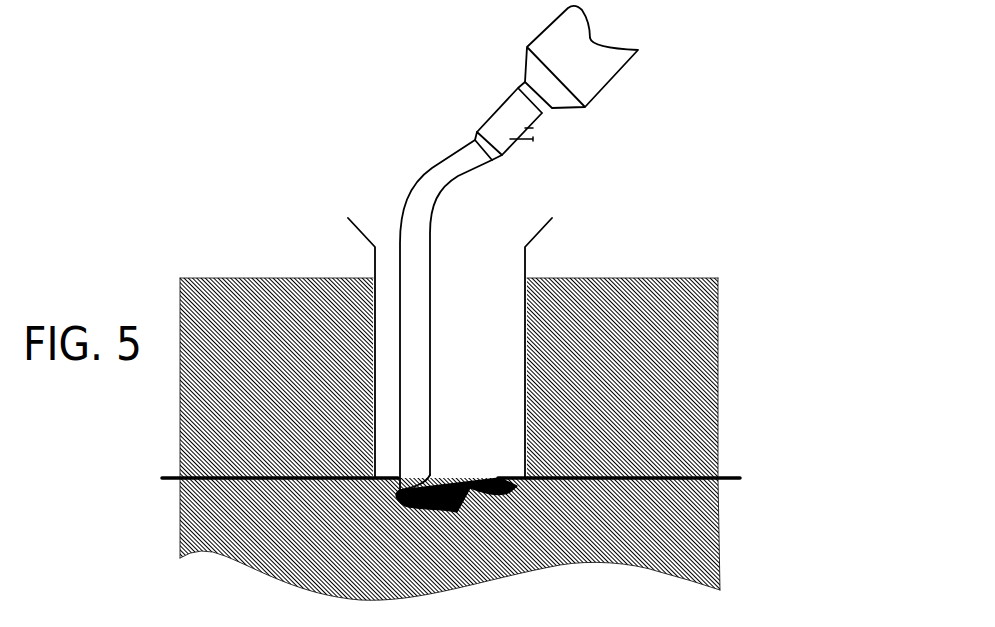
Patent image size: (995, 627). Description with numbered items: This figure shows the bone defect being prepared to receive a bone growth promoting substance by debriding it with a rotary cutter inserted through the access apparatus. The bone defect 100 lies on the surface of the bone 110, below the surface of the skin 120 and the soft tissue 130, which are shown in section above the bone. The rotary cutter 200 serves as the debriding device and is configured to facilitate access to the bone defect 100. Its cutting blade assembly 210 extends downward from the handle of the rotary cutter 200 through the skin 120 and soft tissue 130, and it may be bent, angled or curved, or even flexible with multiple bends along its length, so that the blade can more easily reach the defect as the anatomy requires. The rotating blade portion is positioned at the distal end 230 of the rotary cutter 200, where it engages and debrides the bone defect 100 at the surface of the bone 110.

The bone defect 100 is at (458, 516).
The bone 110 is at (618, 475).
The skin 120 is at (298, 276).
The soft tissue 130 is at (724, 378).
The rotary cutter 200 is at (620, 95).
The cutting blade assembly 210 is at (415, 190).
The distal end 230 is at (435, 472).